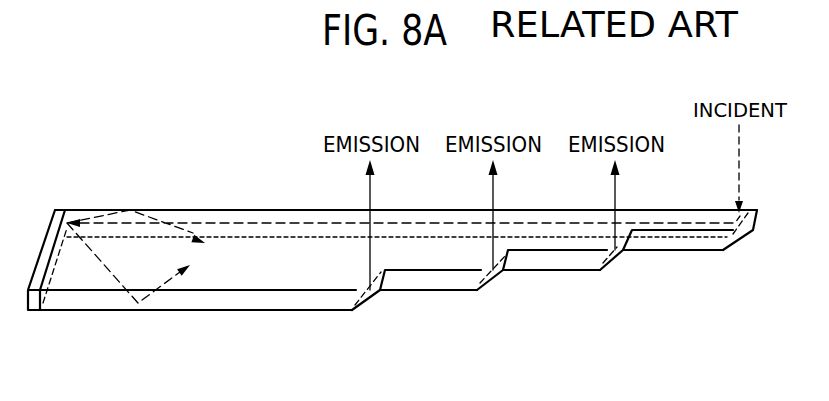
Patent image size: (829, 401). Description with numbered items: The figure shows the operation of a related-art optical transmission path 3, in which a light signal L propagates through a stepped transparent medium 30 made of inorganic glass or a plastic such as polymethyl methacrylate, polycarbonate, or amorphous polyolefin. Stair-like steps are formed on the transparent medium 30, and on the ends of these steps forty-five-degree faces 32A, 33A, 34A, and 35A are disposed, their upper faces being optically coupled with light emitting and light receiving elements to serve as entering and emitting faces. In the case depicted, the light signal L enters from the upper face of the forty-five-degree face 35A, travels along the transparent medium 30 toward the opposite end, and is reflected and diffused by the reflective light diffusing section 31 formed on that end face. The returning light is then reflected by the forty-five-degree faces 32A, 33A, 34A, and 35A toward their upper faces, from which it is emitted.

The optical transmission path 3 is at (157, 198).
The reflective light diffusing section 31 is at (36, 230).
The transparent medium 30 is at (72, 279).
The 45-degree face 32A is at (365, 306).
The 45-degree face 33A is at (490, 286).
The 45-degree face 34A is at (613, 264).
The 45-degree face 35A is at (733, 251).
The light signal L is at (230, 221).